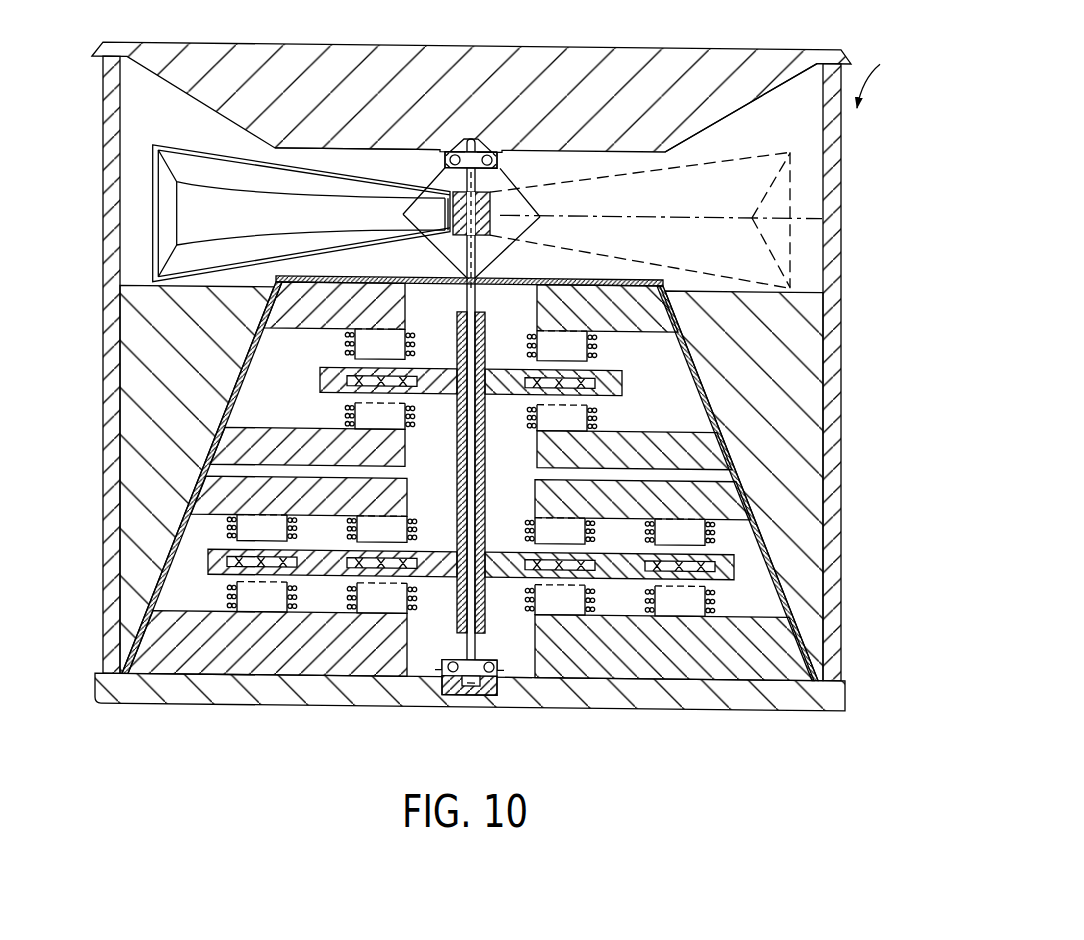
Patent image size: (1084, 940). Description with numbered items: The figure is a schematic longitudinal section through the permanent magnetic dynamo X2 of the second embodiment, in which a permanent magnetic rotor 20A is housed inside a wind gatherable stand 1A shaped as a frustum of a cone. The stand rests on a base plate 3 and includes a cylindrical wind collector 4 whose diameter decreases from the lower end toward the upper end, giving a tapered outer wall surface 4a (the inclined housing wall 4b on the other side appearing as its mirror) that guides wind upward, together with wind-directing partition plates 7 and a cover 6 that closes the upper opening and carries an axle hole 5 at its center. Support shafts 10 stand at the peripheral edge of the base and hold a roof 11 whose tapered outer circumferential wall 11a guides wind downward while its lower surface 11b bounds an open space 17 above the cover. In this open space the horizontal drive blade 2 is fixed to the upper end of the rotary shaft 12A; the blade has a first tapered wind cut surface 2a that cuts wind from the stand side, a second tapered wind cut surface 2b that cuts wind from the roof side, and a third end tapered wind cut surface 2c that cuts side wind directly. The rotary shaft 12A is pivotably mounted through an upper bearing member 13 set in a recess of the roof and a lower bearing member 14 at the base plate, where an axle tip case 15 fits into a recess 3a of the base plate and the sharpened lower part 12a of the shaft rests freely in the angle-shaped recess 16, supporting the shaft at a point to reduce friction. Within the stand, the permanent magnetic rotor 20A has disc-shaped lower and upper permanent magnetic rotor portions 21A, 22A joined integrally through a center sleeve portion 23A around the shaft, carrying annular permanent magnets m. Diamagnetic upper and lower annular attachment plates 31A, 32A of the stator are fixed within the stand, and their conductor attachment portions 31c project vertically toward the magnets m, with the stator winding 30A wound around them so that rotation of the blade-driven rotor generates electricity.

The wind gatherable stand 1A is at (510, 480).
The horizontal drive blade 2 is at (144, 186).
The first tapered wind cut surface 2a is at (727, 280).
The second tapered wind cut surface 2b is at (700, 176).
The third end tapered wind cut surface 2c is at (826, 215).
The base plate 3 is at (490, 703).
The recess 3a is at (527, 705).
The cylindrical wind collector 4 is at (498, 440).
The tapered outer wall surface 4a is at (690, 351).
The left inclined housing wall 4b is at (232, 413).
The axle hole 5 is at (465, 273).
The cover 6 is at (356, 282).
The wind-directing partition plate 7 is at (130, 456).
The support shaft 10 is at (105, 242).
The roof 11 is at (471, 81).
The tapered outer circumferential wall 11a is at (737, 110).
The lower surface 11b is at (380, 150).
The rotary shaft 12A is at (480, 258).
The sharpened lower part 12a is at (480, 704).
The upper bearing member 13 is at (445, 161).
The lower bearing member 14 is at (470, 702).
The axle tip case 15 is at (472, 700).
The recess 16 is at (448, 706).
The open space 17 is at (527, 158).
The permanent magnetic rotor 20A is at (608, 364).
The lower permanent magnetic rotor portion 21A is at (748, 497).
The upper permanent magnetic rotor portion 22A is at (625, 384).
The center sleeve portion 23A is at (486, 460).
The stator winding 30A is at (414, 337).
The upper annular attachment plate 31A is at (258, 386).
The conductor attachment portion 31c is at (345, 339).
The lower annular attachment plate 32A is at (785, 562).
The annular permanent magnet m is at (489, 468).
The permanent magnetic dynamo X2 is at (886, 82).